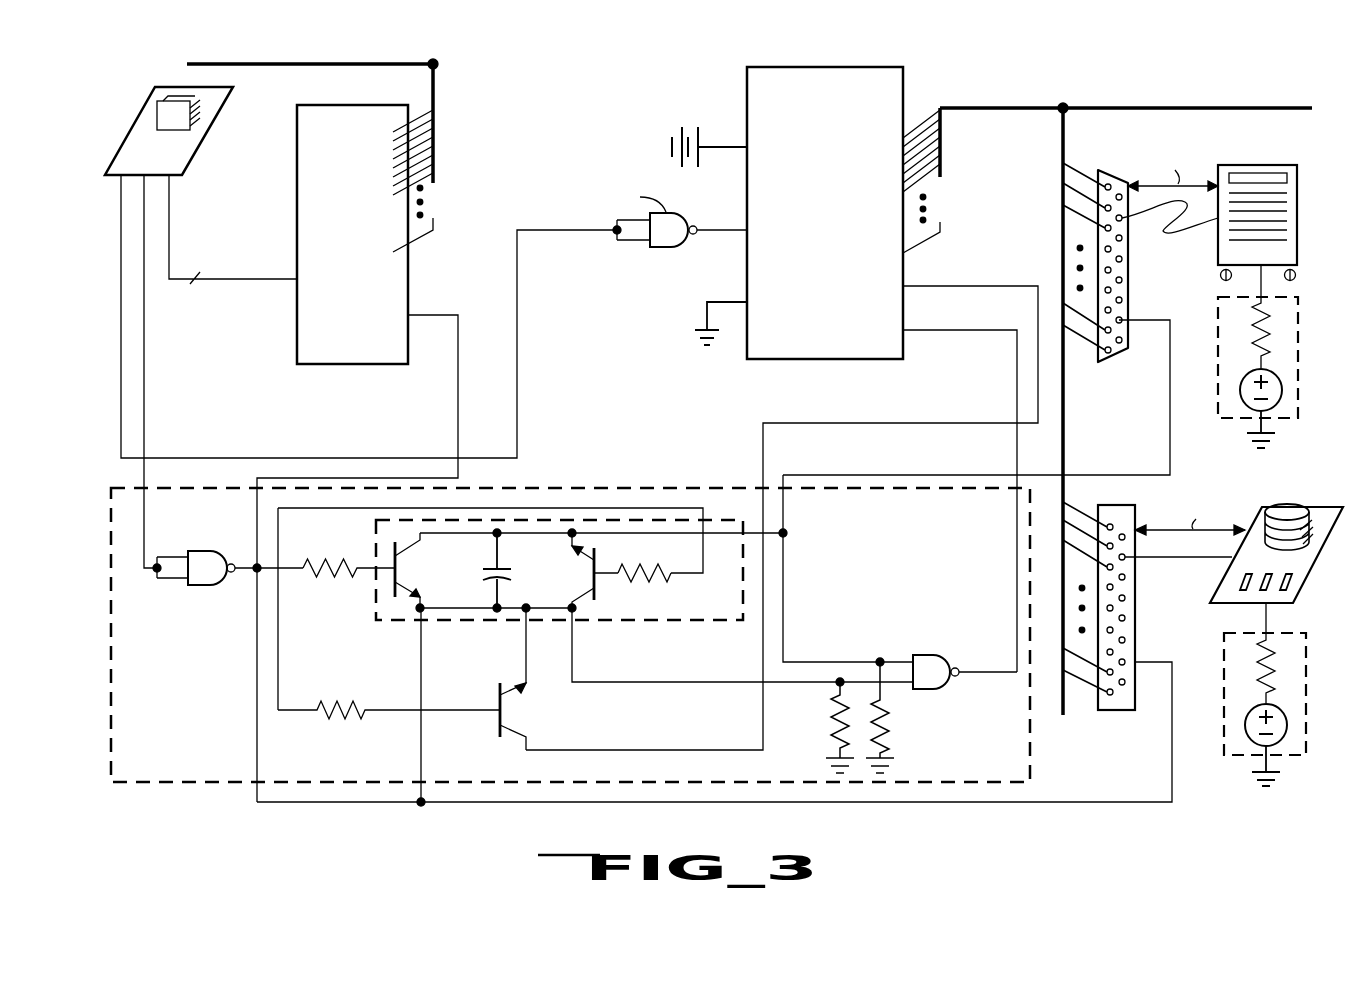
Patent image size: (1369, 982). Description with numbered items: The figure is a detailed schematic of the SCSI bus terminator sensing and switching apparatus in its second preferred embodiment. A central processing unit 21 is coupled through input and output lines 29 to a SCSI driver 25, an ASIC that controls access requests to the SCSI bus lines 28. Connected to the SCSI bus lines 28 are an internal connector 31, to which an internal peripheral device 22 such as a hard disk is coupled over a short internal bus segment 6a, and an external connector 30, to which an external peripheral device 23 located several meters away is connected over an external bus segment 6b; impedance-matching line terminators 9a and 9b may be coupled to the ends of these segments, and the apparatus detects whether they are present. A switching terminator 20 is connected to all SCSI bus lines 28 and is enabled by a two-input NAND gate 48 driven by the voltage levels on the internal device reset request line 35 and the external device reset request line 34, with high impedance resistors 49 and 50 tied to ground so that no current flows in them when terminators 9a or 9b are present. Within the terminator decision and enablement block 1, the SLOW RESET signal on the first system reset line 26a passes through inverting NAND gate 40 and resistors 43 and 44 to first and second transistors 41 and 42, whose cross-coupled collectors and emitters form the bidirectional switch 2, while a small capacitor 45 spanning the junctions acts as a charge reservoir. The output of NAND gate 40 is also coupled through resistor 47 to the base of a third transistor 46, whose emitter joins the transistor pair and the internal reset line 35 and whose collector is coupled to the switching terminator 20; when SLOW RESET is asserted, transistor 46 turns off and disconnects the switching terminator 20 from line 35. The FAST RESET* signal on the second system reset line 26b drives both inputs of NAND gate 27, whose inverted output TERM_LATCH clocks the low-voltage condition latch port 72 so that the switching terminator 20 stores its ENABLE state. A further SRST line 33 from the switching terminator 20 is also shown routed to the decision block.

The terminator decision and enablement block 1 is at (170, 782).
The bidirectional switch 2 is at (376, 541).
The switching terminator 20 is at (870, 67).
The central processing unit 21 is at (192, 160).
The internal peripheral device 22 is at (1305, 505).
The external peripheral device 23 is at (1258, 165).
The SCSI driver 25 is at (360, 105).
The first system reset line 26a is at (294, 399).
The second system reset line 26b is at (288, 427).
The NAND gate 27 is at (672, 247).
The SCSI bus lines 28 is at (435, 100).
The input and output lines 29 is at (232, 277).
The external connector 30 is at (1112, 170).
The internal connector 31 is at (1120, 504).
The SRST line 33 is at (1012, 280).
The external device reset request line 34 is at (1155, 318).
The internal device reset request line 35 is at (1158, 662).
The inverting NAND gate 40 is at (205, 550).
The first transistor 41 is at (408, 568).
The second transistor 42 is at (585, 572).
The resistor 43 is at (330, 578).
The resistor 44 is at (648, 580).
The capacitor 45 is at (483, 573).
The third transistor 46 is at (514, 708).
The resistor 47 is at (338, 702).
The NAND gate 48 is at (935, 654).
The resistor 49 is at (828, 722).
The resistor 50 is at (889, 724).
The low-voltage condition latch port 72 is at (772, 214).
The internal bus segment 6a is at (1157, 560).
The external bus segment 6b is at (1160, 241).
The line terminator 9a is at (1306, 683).
The line terminator 9b is at (1298, 345).